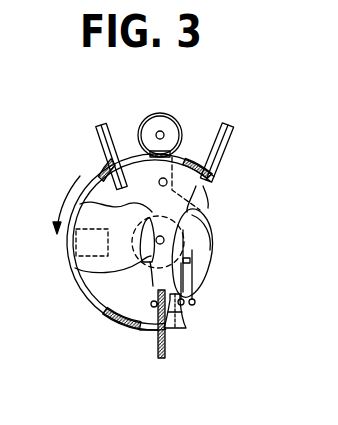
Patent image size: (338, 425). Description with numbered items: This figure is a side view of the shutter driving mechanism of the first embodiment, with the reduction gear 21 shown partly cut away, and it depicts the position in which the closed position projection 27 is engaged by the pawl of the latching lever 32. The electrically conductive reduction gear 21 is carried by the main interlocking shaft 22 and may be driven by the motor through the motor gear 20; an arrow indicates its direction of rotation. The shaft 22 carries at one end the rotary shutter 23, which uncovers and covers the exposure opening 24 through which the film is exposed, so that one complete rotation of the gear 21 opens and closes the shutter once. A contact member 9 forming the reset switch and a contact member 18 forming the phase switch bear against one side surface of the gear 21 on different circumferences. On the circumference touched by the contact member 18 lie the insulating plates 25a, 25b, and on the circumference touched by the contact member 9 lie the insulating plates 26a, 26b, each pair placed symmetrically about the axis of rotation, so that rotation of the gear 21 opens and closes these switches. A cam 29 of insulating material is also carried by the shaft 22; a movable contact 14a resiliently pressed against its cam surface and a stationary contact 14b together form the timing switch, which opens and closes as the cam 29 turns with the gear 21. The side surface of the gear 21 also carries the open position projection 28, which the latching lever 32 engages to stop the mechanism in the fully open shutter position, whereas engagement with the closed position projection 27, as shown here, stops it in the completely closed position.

The contact member 9 is at (112, 106).
The movable contact 14a is at (190, 258).
The stationary contact 14b is at (193, 287).
The contact member 18 is at (232, 130).
The motor gear 20 is at (161, 112).
The reduction gear 21 is at (200, 189).
The main interlocking shaft 22 is at (154, 272).
The rotary shutter 23 is at (80, 268).
The exposure opening 24 is at (80, 244).
The insulating plate 25a is at (205, 182).
The insulating plate 25b is at (112, 314).
The insulating plate 26a is at (107, 170).
The insulating plate 26b is at (186, 308).
The closed position projection 27 is at (153, 308).
The open position projection 28 is at (160, 185).
The cam 29 is at (192, 222).
The latching lever 32 is at (168, 343).